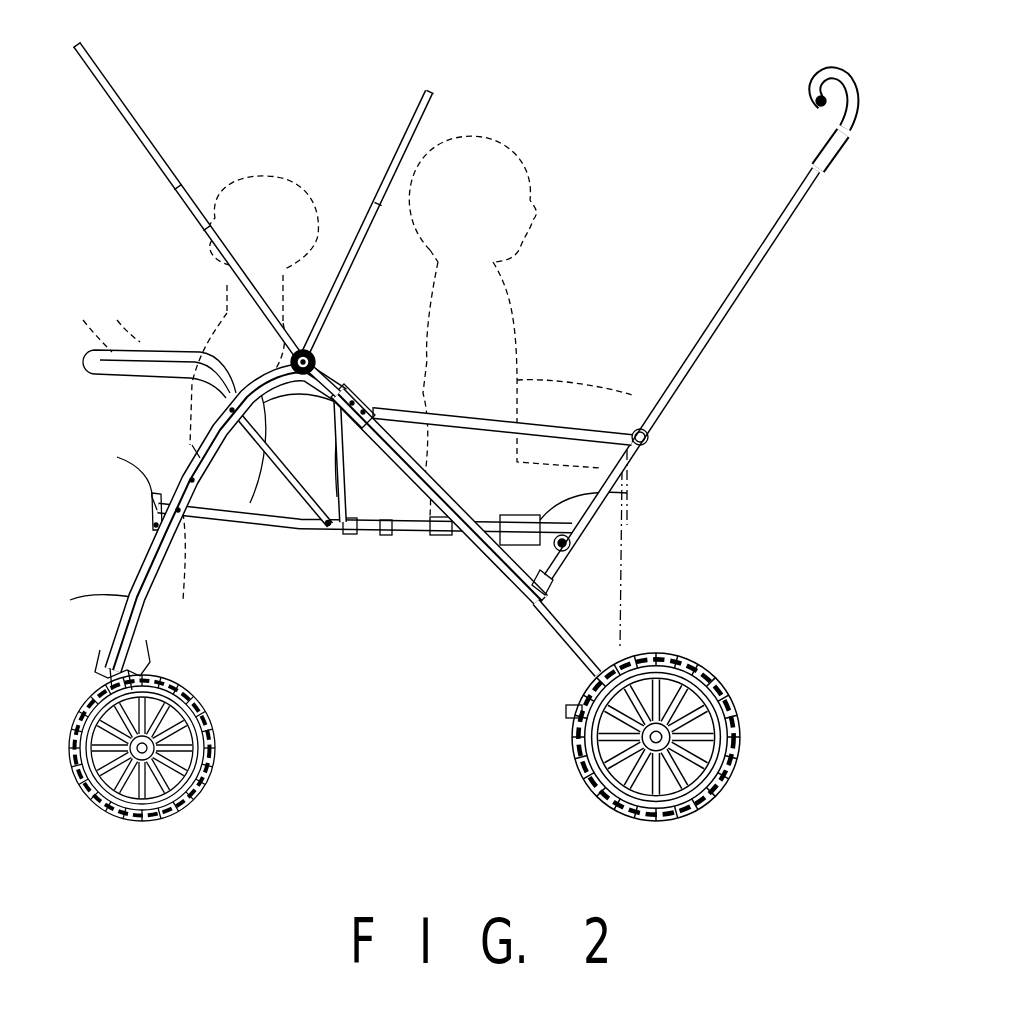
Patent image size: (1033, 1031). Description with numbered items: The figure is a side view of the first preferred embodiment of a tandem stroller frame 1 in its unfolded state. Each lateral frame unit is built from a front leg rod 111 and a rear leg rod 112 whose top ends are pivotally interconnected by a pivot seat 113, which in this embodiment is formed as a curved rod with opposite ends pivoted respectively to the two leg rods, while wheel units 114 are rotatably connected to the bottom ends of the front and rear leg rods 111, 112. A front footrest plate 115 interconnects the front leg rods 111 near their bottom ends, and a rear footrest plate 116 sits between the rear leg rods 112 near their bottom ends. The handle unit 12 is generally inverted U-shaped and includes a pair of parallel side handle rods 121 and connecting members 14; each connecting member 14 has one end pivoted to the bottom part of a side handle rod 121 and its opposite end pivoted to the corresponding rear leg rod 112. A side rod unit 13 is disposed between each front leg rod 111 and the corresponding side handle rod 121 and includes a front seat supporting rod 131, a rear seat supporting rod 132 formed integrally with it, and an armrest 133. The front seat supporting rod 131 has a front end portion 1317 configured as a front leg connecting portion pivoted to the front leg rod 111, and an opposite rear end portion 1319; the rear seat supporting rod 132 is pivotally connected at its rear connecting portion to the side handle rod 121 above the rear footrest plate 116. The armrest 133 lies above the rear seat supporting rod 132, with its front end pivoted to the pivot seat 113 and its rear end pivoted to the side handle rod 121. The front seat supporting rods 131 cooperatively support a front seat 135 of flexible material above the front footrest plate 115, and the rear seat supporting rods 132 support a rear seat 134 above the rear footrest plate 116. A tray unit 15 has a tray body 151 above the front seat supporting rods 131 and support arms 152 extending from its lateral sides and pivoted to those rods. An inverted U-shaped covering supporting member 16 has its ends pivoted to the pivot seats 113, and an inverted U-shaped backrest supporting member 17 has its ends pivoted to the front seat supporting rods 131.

The tandem stroller frame 1 is at (475, 431).
The handle unit 12 is at (712, 325).
The side handle rod 121 is at (680, 357).
The side rod unit 13 is at (535, 384).
The front seat supporting rod 131 is at (227, 520).
The rear seat supporting rod 132 is at (440, 538).
The armrest 133 is at (576, 424).
The rear seat 134 is at (627, 490).
The front seat 135 is at (190, 517).
The front end portion 1317 is at (192, 452).
The rear end portion 1319 is at (343, 533).
The connecting member 14 is at (622, 572).
The tray unit 15 is at (197, 415).
The tray body 151 is at (97, 338).
The support arm 152 is at (299, 524).
The covering supporting member 16 is at (447, 118).
The backrest supporting member 17 is at (423, 222).
The front leg rod 111 is at (210, 521).
The rear leg rod 112 is at (467, 487).
The pivot seat 113 is at (368, 398).
The wheel unit 114 is at (222, 720).
The front footrest plate 115 is at (150, 645).
The rear footrest plate 116 is at (572, 712).